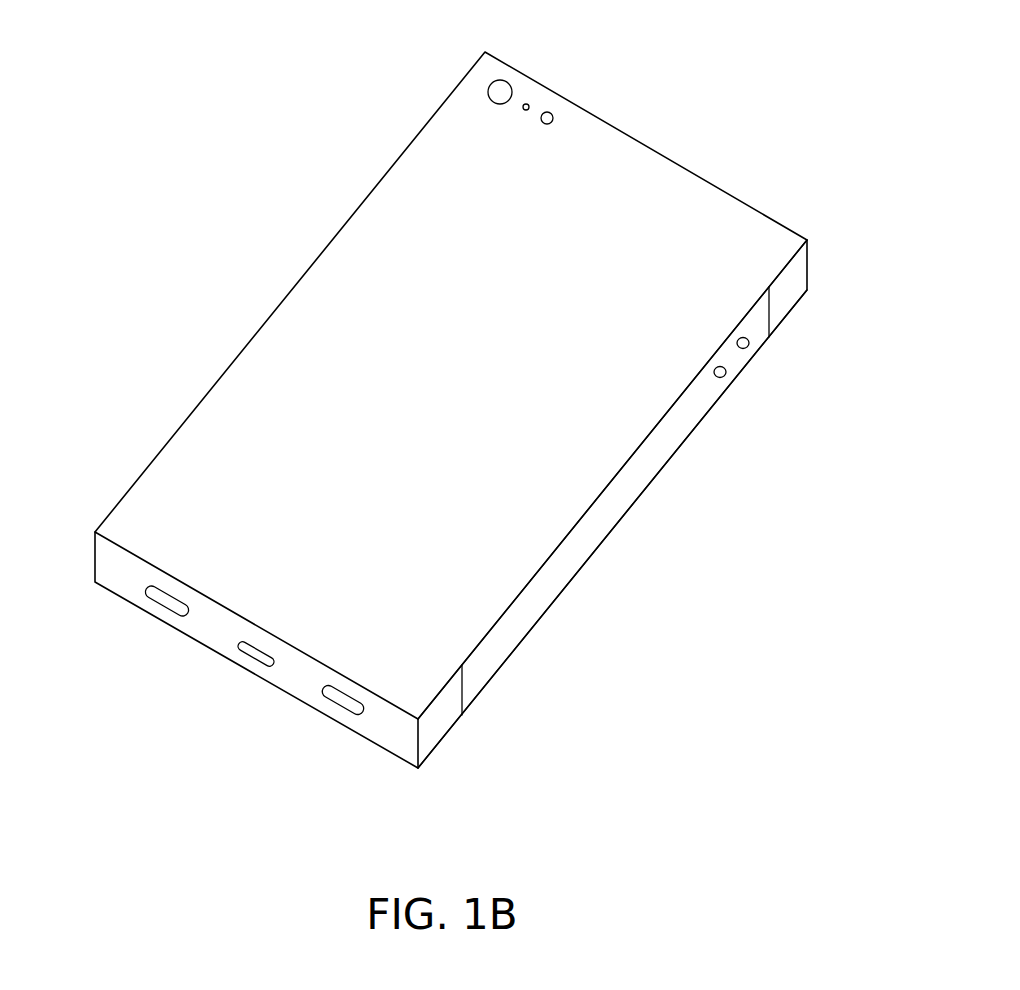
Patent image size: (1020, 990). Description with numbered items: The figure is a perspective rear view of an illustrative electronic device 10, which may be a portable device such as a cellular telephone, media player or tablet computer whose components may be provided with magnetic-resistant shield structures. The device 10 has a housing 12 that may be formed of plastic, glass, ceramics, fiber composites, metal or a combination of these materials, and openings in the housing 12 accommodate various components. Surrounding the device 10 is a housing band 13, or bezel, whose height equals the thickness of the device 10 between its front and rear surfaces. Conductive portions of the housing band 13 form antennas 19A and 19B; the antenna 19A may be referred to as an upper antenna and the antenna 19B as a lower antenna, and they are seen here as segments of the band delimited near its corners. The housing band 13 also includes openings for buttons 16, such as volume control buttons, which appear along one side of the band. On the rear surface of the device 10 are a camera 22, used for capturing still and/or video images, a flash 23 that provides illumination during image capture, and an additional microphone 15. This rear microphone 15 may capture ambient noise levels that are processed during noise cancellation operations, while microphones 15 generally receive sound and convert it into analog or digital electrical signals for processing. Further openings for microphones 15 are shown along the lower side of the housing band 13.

The electronic device 10 is at (762, 50).
The housing 12 is at (809, 240).
The housing band 13 is at (635, 490).
The microphone 15 is at (528, 104).
The button 16 is at (749, 345).
The upper antenna 19A is at (442, 725).
The lower antenna 19B is at (790, 295).
The camera 22 is at (500, 80).
The flash 23 is at (552, 114).